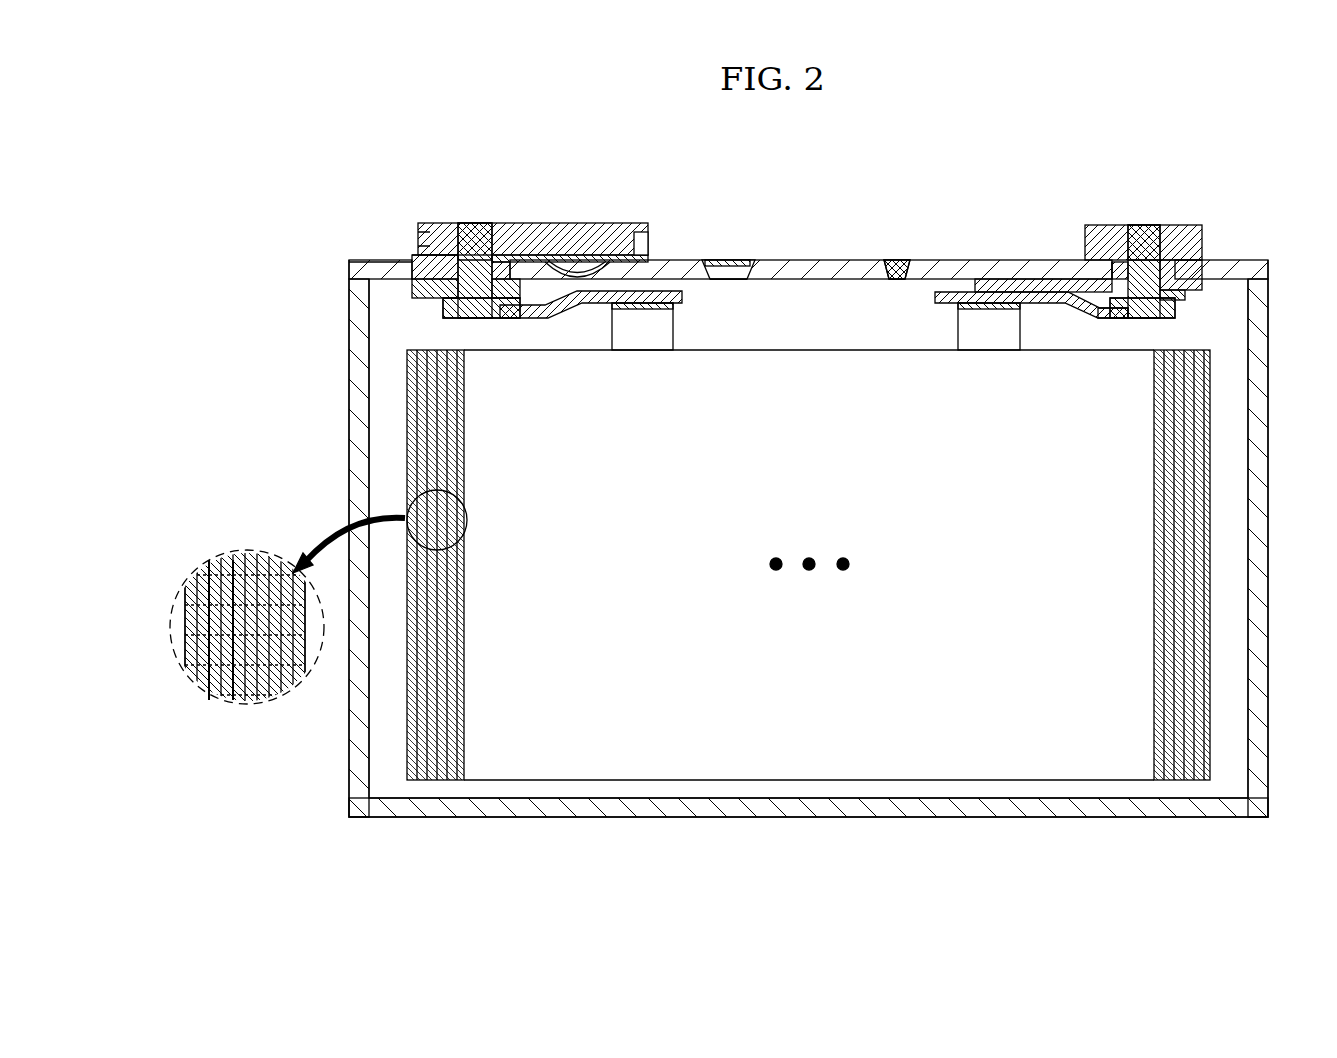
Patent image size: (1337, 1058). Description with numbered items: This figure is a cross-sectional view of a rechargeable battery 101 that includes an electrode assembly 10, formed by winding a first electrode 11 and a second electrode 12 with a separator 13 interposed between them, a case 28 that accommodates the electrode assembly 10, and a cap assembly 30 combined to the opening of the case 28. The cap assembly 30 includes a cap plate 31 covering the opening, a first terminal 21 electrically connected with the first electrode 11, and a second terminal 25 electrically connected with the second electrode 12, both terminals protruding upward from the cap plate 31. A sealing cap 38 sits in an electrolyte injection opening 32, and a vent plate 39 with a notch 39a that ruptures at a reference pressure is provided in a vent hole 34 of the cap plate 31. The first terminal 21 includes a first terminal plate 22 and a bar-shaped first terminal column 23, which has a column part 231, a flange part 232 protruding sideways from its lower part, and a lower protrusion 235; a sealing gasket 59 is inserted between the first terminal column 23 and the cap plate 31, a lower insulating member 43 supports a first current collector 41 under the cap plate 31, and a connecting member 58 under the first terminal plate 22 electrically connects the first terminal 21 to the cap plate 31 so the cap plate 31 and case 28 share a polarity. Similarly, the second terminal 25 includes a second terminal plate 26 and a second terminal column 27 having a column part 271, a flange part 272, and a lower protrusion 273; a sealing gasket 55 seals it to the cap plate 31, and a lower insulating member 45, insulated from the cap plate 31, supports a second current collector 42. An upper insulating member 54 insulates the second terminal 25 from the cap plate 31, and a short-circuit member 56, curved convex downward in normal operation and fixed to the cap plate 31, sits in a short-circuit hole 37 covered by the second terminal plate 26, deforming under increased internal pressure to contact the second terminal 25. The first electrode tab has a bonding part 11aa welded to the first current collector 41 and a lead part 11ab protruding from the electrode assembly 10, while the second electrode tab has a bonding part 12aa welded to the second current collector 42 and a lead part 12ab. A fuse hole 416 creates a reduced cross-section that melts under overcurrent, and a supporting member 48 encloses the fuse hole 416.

The electrode assembly 10 is at (867, 782).
The first electrode 11 is at (205, 688).
The bonding part 11aa is at (948, 305).
The lead part 11ab is at (985, 330).
The second electrode 12 is at (233, 690).
The bonding part 12aa is at (614, 305).
The lead part 12ab is at (665, 308).
The separator 13 is at (210, 572).
The first terminal 21 is at (1140, 143).
The first terminal plate 22 is at (1108, 228).
The first terminal column 23 is at (1140, 220).
The column part 231 is at (1150, 240).
The flange part 232 is at (1172, 312).
The lower protrusion 235 is at (1130, 322).
The second terminal 25 is at (475, 138).
The second terminal plate 26 is at (448, 228).
The second terminal column 27 is at (476, 220).
The column part 271 is at (492, 240).
The flange part 272 is at (492, 320).
The lower protrusion 273 is at (478, 320).
The case 28 is at (1268, 530).
The cap assembly 30 is at (690, 256).
The cap plate 31 is at (1210, 270).
The electrolyte injection opening 32 is at (895, 280).
The vent hole 34 is at (735, 280).
The short-circuit hole 37 is at (568, 308).
The sealing cap 38 is at (897, 262).
The vent plate 39 is at (752, 262).
The notch 39a is at (725, 262).
The first current collector 41 is at (1165, 322).
The second current collector 42 is at (455, 303).
The lower insulating member 43 is at (1185, 292).
The lower insulating member 45 is at (440, 288).
The supporting member 48 is at (1075, 320).
The upper insulating member 54 is at (640, 240).
The sealing gasket 55 is at (428, 262).
The short-circuit member 56 is at (582, 265).
The connecting member 58 is at (1224, 262).
The sealing gasket 59 is at (1100, 262).
The rechargeable battery 101 is at (898, 156).
The fuse hole 416 is at (1105, 325).